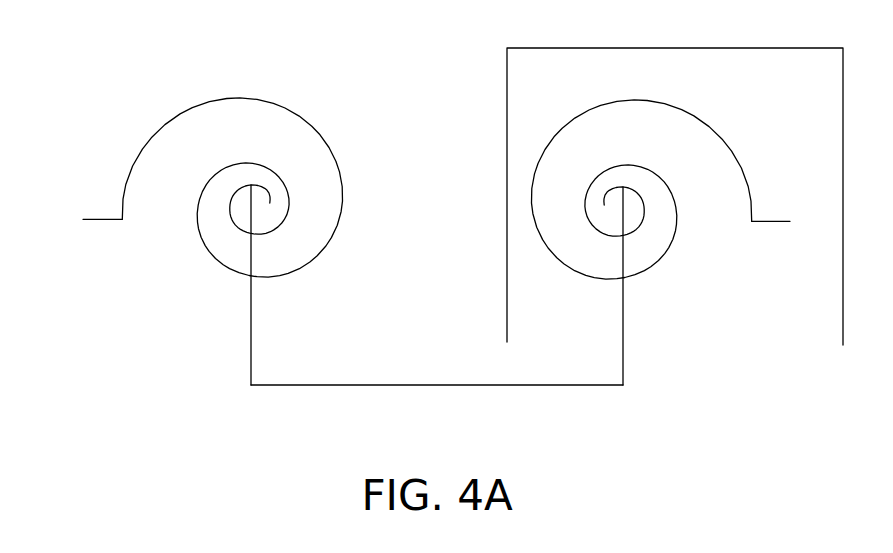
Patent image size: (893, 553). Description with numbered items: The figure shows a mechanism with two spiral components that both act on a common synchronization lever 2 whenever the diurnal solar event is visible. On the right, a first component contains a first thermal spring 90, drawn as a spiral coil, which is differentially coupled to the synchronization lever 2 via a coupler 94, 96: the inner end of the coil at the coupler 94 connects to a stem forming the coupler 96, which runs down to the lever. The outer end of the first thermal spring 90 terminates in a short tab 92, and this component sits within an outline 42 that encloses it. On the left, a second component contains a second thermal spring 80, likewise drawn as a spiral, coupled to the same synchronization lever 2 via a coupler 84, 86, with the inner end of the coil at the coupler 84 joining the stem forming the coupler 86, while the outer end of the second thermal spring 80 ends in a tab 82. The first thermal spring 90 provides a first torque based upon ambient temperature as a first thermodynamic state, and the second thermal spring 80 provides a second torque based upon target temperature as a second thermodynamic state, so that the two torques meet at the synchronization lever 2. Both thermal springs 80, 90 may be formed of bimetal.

The synchronization lever 2 is at (447, 385).
The housing enclosure 42 is at (590, 48).
The second thermal spring 80 is at (237, 98).
The left outer tab 82 is at (84, 219).
The coupler 84 is at (259, 209).
The coupler 86 is at (251, 360).
The first thermal spring 90 is at (652, 102).
The right outer tab 92 is at (790, 221).
The coupler 94 is at (615, 211).
The coupler 96 is at (623, 326).